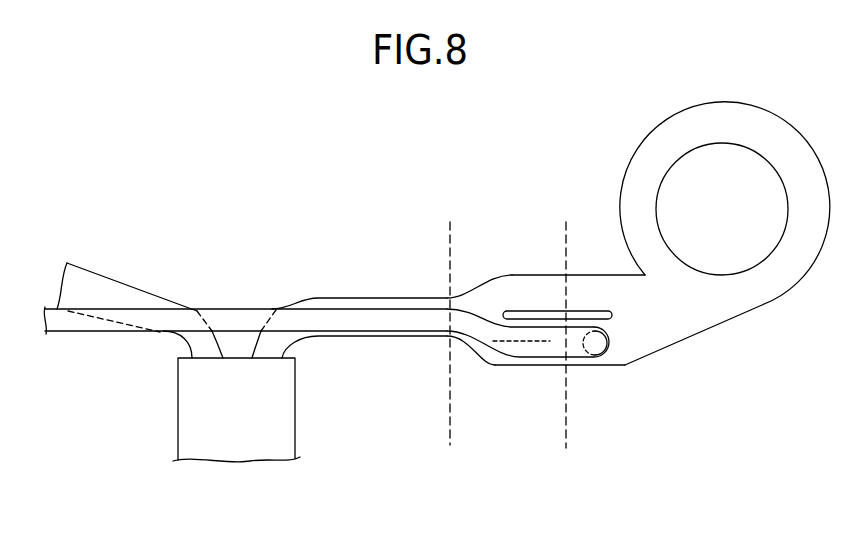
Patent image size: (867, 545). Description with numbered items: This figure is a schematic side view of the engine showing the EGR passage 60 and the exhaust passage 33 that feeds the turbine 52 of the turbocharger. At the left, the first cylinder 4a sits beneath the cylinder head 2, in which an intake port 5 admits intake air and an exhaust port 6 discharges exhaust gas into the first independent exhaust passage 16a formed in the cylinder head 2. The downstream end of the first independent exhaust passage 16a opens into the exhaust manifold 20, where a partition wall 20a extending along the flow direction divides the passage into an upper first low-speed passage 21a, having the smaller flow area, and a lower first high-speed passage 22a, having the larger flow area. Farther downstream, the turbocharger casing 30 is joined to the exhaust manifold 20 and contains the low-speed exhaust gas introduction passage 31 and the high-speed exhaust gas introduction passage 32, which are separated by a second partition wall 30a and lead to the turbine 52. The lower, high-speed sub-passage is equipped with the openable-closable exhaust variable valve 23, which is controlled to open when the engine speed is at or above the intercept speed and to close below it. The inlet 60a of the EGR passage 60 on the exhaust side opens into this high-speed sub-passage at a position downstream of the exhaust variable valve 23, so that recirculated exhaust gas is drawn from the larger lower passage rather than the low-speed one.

The cylinder head 2 is at (380, 177).
The intake port 5 is at (110, 278).
The EGR passage 60 is at (230, 309).
The exhaust port 6 is at (313, 298).
The first independent exhaust passage 16a is at (377, 298).
The first cylinder 4a is at (188, 405).
The exhaust passage 33 is at (395, 342).
The exhaust manifold 20 is at (510, 275).
The first low-speed passage 21a is at (535, 290).
The first high-speed passage 22a is at (538, 366).
The partition wall 20a is at (512, 308).
The exhaust variable valve 23 is at (518, 348).
The inlet 60a is at (597, 366).
The partition wall 30a is at (580, 310).
The turbocharger casing 30 is at (608, 275).
The low-speed exhaust gas introduction passage 31 is at (620, 311).
The high-speed exhaust gas introduction passage 32 is at (620, 352).
The turbine 52 is at (733, 173).